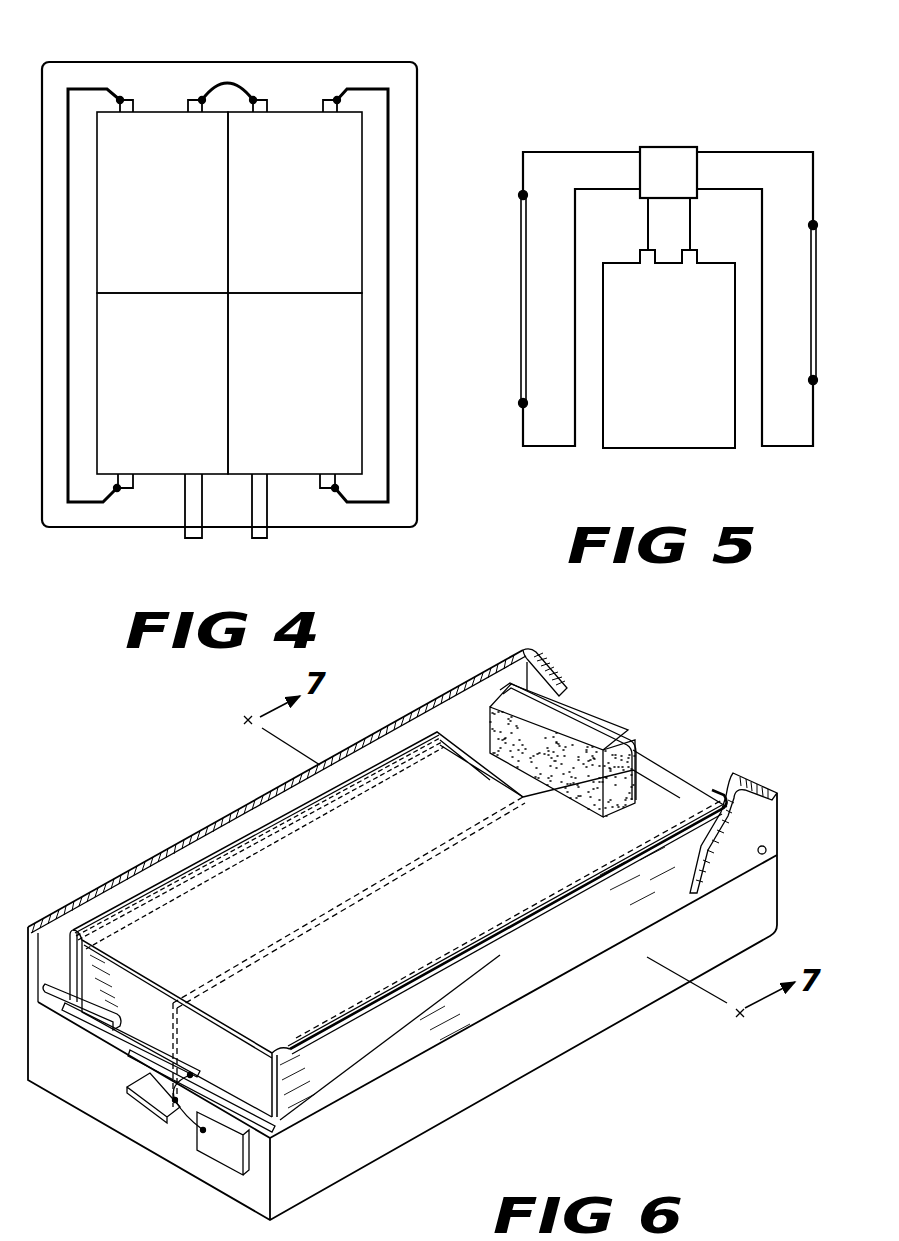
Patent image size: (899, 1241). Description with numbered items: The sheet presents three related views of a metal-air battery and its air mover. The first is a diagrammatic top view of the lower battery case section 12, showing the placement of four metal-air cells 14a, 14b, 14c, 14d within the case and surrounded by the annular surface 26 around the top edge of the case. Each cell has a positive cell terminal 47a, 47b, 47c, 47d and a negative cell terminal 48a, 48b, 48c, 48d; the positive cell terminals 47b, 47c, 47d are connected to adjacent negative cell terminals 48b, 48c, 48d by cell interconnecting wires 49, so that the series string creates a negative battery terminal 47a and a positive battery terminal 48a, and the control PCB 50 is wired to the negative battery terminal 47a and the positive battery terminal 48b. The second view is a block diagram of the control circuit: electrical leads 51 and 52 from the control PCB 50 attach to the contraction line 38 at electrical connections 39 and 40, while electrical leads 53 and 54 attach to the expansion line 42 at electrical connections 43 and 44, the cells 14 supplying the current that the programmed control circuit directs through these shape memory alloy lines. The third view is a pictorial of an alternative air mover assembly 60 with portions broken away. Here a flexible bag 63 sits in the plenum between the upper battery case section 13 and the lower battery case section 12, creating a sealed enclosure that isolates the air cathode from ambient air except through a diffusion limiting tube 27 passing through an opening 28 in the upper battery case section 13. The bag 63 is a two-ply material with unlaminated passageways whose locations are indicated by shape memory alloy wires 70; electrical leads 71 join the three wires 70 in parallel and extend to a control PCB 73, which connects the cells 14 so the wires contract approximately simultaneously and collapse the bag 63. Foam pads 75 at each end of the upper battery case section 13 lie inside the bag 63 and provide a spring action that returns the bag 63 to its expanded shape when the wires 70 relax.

In FIG. 6, the lower battery case section 12 is at (387, 1127).
In FIG. 6, the upper battery case section 13 is at (121, 883).
In FIG. 5, the cells 14 is at (682, 368).
In FIG. 4, the metal-air cell 14a is at (318, 383).
In FIG. 4, the metal-air cell 14b is at (190, 383).
In FIG. 4, the metal-air cell 14c is at (312, 222).
In FIG. 4, the metal-air cell 14d is at (183, 222).
In FIG. 4, the annular surface 26 is at (398, 412).
In FIG. 6, the annular surface 26 is at (478, 1007).
In FIG. 6, the diffusion limiting tube 27 is at (737, 845).
In FIG. 6, the opening 28 is at (767, 851).
In FIG. 5, the contraction line 38 is at (816, 345).
In FIG. 5, the electrical connection 39 is at (813, 225).
In FIG. 5, the electrical connection 40 is at (813, 380).
In FIG. 5, the expansion line 42 is at (521, 318).
In FIG. 5, the electrical connection 43 is at (523, 195).
In FIG. 5, the electrical connection 44 is at (523, 403).
In FIG. 4, the positive cell terminal 47a is at (268, 536).
In FIG. 5, the positive cell terminal 47a is at (696, 257).
In FIG. 4, the positive cell terminal 47b is at (117, 490).
In FIG. 4, the positive cell terminal 47c is at (337, 100).
In FIG. 4, the positive cell terminal 47d is at (202, 100).
In FIG. 4, the negative cell terminal 48a is at (335, 490).
In FIG. 4, the negative cell terminal 48b is at (185, 536).
In FIG. 5, the negative cell terminal 48b is at (641, 257).
In FIG. 4, the negative cell terminal 48c is at (253, 100).
In FIG. 4, the negative cell terminal 48d is at (120, 100).
In FIG. 4, the cell interconnecting wires 49 is at (68, 237).
In FIG. 5, the control PCB 50 is at (677, 162).
In FIG. 5, the electrical lead 51 is at (763, 152).
In FIG. 5, the electrical lead 52 is at (772, 446).
In FIG. 5, the electrical lead 53 is at (598, 152).
In FIG. 5, the electrical lead 54 is at (533, 446).
In FIG. 6, the air mover assembly 60 is at (201, 776).
In FIG. 6, the flexible bag 63 is at (570, 927).
In FIG. 6, the shape memory alloy wire 70 is at (393, 752).
In FIG. 6, the electrical leads 71 is at (130, 1052).
In FIG. 6, the control PCB 73 is at (217, 1148).
In FIG. 6, the foam pad 75 is at (578, 734).